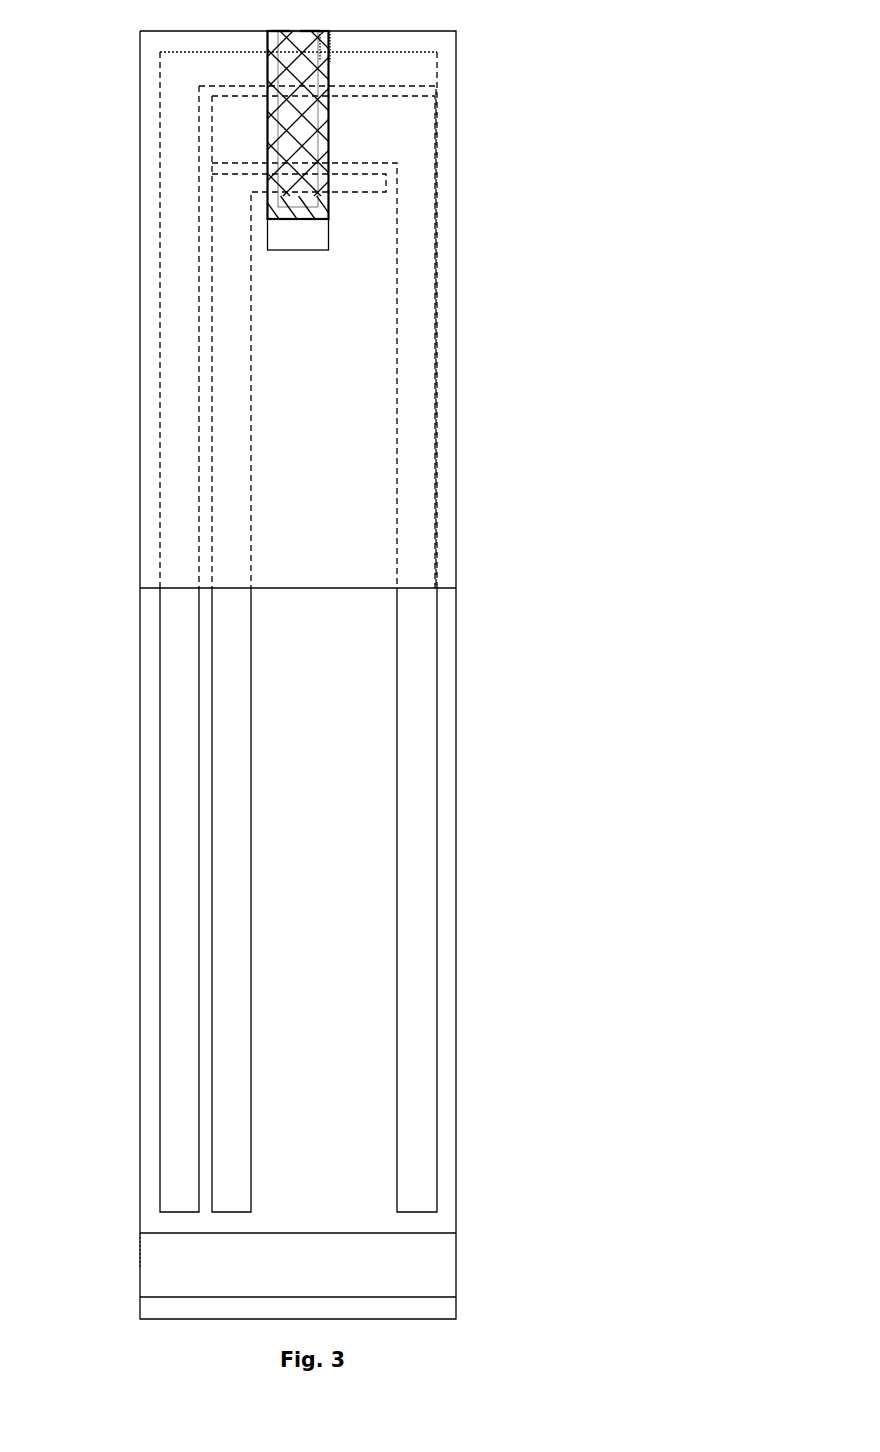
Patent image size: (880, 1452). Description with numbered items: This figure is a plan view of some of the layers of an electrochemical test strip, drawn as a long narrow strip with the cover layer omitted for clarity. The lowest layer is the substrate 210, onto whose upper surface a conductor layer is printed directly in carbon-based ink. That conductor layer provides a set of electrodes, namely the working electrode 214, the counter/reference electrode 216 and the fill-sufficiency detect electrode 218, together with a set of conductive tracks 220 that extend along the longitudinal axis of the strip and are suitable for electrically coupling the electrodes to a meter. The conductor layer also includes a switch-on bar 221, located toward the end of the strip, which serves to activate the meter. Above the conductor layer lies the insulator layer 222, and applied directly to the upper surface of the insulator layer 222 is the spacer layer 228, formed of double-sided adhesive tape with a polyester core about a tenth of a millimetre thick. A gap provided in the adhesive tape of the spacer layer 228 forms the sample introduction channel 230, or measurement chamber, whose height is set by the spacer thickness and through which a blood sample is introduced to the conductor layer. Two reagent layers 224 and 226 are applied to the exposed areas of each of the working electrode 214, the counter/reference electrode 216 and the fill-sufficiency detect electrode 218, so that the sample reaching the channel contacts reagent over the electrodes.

The substrate 210 is at (397, 1307).
The working electrode 214 is at (336, 70).
The counter/reference electrode 216 is at (257, 137).
The fill-sufficiency detect electrode 218 is at (330, 183).
The conductive tracks 220 is at (515, 1200).
The switch-on bar 221 is at (423, 1244).
The insulator layer 222 is at (325, 38).
The reagent layer 224 is at (286, 31).
The reagent layer 226 is at (308, 31).
The spacer layer 228 is at (323, 554).
The sample introduction channel 230 is at (297, 241).